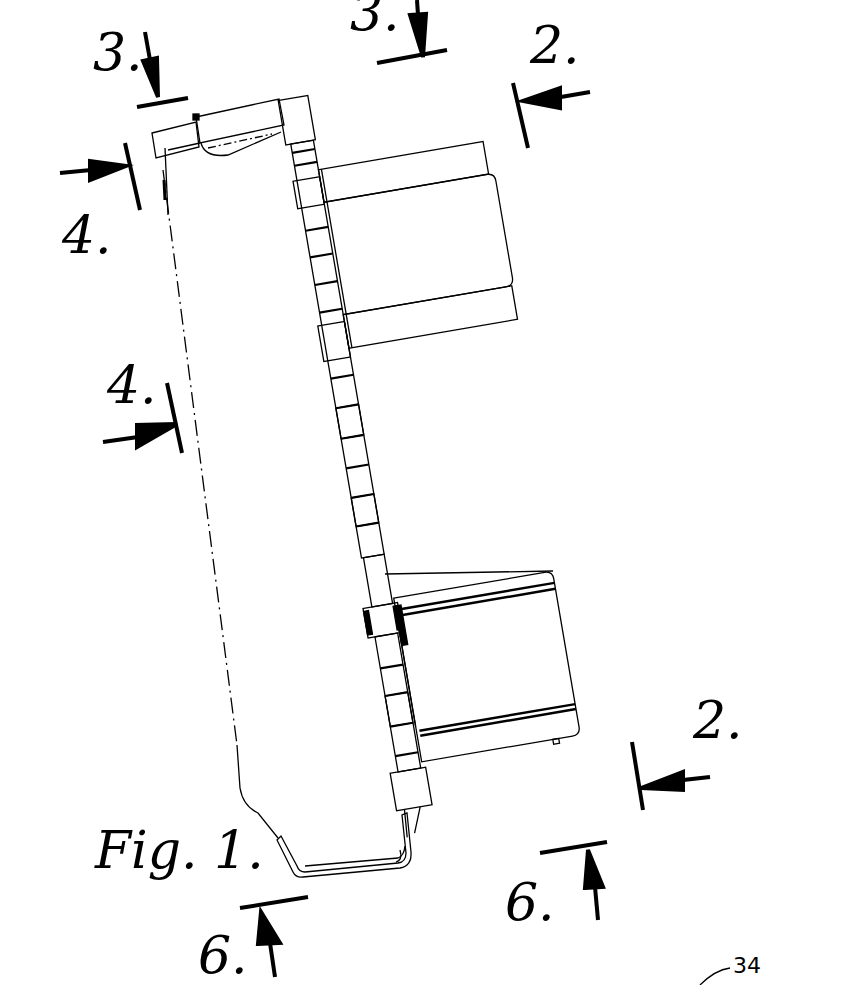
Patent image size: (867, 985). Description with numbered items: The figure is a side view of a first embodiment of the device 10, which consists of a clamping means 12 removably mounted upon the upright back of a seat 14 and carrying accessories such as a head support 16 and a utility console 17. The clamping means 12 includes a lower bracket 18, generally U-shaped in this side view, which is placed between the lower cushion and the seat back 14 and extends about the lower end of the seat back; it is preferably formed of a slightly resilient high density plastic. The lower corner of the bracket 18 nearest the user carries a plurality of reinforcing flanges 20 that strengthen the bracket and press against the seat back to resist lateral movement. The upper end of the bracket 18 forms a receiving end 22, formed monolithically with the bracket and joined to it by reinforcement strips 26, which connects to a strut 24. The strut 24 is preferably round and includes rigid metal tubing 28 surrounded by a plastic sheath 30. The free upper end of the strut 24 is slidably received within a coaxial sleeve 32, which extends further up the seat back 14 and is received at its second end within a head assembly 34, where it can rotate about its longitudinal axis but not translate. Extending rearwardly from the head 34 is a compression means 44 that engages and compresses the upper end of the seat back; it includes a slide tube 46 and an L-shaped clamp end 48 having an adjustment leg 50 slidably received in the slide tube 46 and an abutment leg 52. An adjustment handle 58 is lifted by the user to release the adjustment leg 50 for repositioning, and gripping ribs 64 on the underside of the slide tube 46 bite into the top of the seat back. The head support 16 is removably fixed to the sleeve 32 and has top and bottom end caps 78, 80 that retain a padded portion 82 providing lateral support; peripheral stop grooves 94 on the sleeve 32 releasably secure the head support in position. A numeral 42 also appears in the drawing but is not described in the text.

The device 10 is at (692, 275).
The clamping means 12 is at (437, 448).
The seat 14 is at (215, 596).
The head support 16 is at (510, 228).
The utility console 17 is at (568, 640).
The lower bracket 18 is at (345, 878).
The reinforcing flanges 20 is at (410, 865).
The receiving end 22 is at (430, 793).
The strut 24 is at (390, 717).
The reinforcement strips 26 is at (415, 822).
The rigid tubing 28 is at (400, 573).
The sheath 30 is at (378, 682).
The sleeve 32 is at (360, 410).
The head assembly 34 is at (313, 125).
The fastener 42 is at (621, 984).
The compression means 44 is at (240, 110).
The slide tube 46 is at (277, 140).
The clamp end 48 is at (152, 133).
The adjustment leg 50 is at (168, 145).
The abutment leg 52 is at (163, 198).
The adjustment handle 58 is at (196, 118).
The gripping ribs 64 is at (223, 157).
The top end cap 78 is at (412, 150).
The bottom end cap 80 is at (483, 328).
The padded portion 82 is at (416, 235).
The stop grooves 94 is at (375, 517).